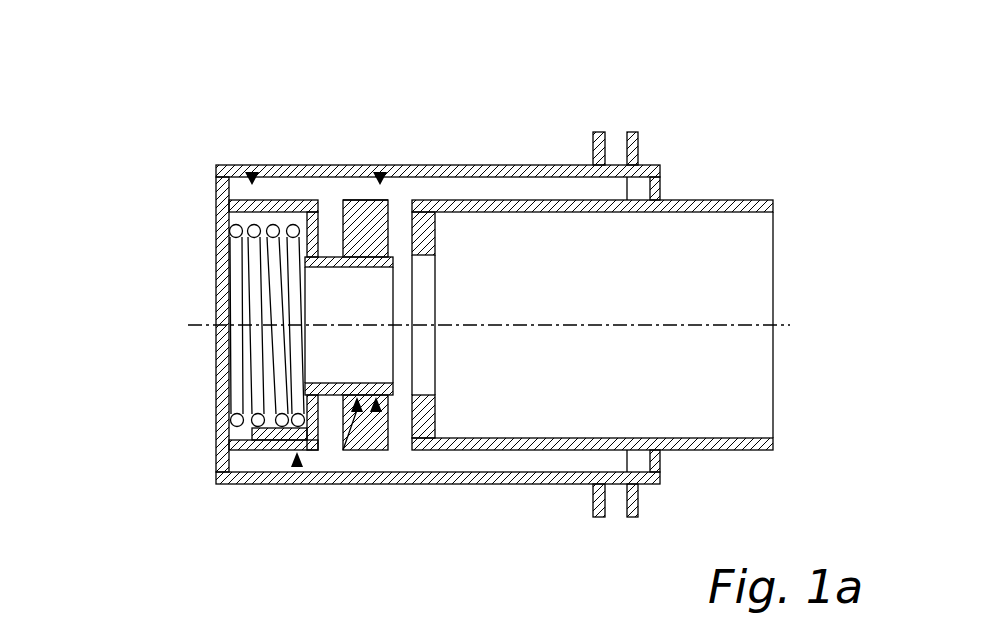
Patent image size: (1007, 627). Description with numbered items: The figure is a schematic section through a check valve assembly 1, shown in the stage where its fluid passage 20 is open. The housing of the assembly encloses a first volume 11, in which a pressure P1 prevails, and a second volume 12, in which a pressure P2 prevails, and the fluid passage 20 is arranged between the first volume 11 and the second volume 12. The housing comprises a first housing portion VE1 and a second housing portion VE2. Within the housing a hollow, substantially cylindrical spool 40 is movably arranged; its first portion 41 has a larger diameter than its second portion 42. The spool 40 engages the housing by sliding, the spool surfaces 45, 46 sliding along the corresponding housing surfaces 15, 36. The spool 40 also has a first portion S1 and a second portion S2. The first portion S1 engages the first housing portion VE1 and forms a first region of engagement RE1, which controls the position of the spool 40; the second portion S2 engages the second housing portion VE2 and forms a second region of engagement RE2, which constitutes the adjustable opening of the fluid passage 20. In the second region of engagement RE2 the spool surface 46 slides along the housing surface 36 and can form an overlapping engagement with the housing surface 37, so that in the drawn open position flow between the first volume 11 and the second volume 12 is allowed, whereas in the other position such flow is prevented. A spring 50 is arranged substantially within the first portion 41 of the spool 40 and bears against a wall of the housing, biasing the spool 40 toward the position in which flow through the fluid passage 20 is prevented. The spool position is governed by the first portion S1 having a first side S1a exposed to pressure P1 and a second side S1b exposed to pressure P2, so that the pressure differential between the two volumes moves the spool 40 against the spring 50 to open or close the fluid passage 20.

The check valve assembly 1 is at (738, 96).
The first volume 11 is at (513, 190).
The second volume 12 is at (696, 240).
The housing surface 15 is at (272, 222).
The fluid passage 20 is at (400, 220).
The housing surface 36 is at (436, 220).
The housing surface 37 is at (436, 243).
The spool 40 is at (253, 198).
The first portion of the spool 41 is at (246, 462).
The second portion of the spool 42 is at (343, 450).
The spool surface 45 is at (236, 237).
The spool surface 46 is at (348, 264).
The spring 50 is at (222, 348).
The first portion of the spool S1 is at (297, 462).
The first side S1a is at (356, 202).
The second side S1b is at (303, 247).
The second portion of the spool S2 is at (376, 410).
The first region of engagement RE1 is at (330, 220).
The second region of engagement RE2 is at (436, 298).
The first housing portion VE1 is at (252, 174).
The second housing portion VE2 is at (381, 174).